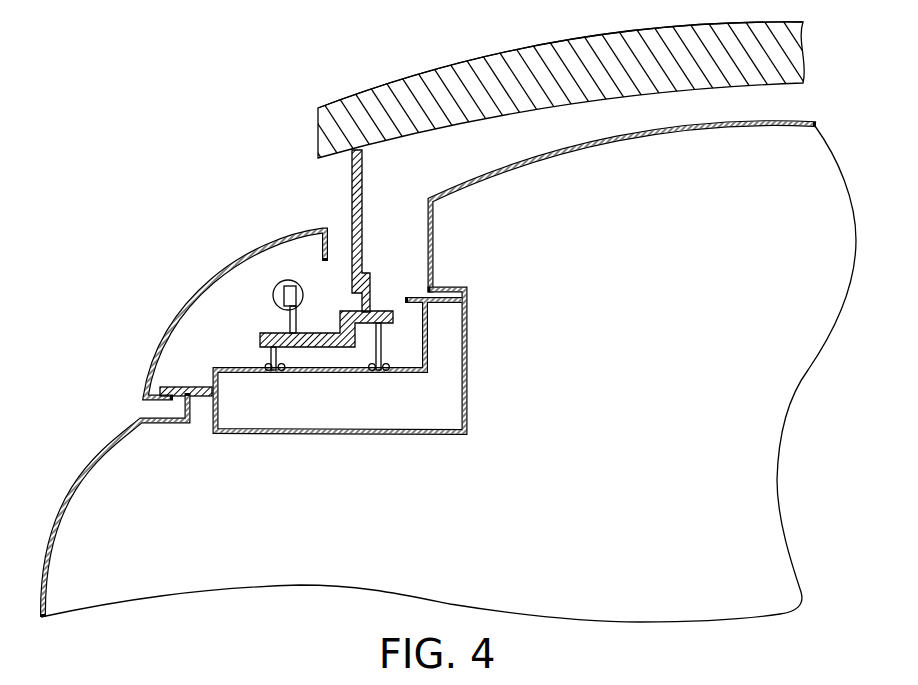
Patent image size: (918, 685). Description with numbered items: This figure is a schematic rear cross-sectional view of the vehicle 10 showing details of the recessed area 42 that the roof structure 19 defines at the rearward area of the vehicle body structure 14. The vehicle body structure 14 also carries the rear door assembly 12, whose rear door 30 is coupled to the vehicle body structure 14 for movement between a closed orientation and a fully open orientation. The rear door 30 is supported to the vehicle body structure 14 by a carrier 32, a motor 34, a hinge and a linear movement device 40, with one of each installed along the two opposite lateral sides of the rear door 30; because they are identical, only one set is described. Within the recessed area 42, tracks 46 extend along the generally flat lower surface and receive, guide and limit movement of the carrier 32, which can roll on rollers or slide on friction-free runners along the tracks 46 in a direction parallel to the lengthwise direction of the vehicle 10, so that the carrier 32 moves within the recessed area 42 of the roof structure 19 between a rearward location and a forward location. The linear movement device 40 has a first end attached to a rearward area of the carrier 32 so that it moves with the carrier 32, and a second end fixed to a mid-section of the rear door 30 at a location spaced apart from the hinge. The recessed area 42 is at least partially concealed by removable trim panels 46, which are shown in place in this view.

The vehicle 10 is at (194, 114).
The rear door assembly 12 is at (405, 75).
The vehicle body structure 14 is at (83, 477).
The roof structure 19 is at (530, 158).
The rear door 30 is at (515, 80).
The carrier 32 is at (386, 310).
The motor 34 is at (273, 302).
The linear movement device 40 is at (352, 193).
The recessed area 42 is at (421, 330).
The tracks 46 is at (176, 306).